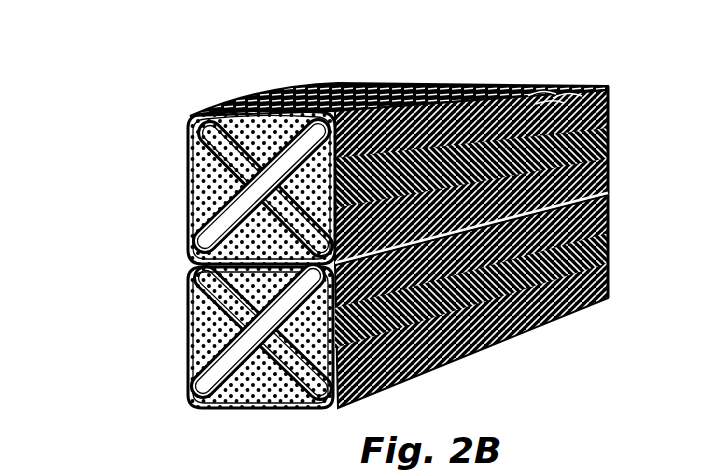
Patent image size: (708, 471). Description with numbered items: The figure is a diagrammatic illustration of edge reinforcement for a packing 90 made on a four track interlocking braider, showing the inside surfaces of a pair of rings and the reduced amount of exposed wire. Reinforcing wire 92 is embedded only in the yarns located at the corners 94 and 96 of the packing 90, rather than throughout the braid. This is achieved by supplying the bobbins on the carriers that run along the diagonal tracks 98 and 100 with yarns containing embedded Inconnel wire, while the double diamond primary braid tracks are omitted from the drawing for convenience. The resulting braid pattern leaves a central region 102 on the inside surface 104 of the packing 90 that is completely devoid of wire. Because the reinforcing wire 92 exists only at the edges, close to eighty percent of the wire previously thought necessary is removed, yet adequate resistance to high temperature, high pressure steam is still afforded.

The packing 90 is at (328, 80).
The reinforcing wire 92 is at (562, 77).
The corner of the packing 94 is at (608, 78).
The corner of the packing 96 is at (605, 185).
The diagonal track 98 is at (184, 156).
The diagonal track 100 is at (200, 207).
The central region 102 is at (604, 103).
The inside surface 104 is at (604, 203).